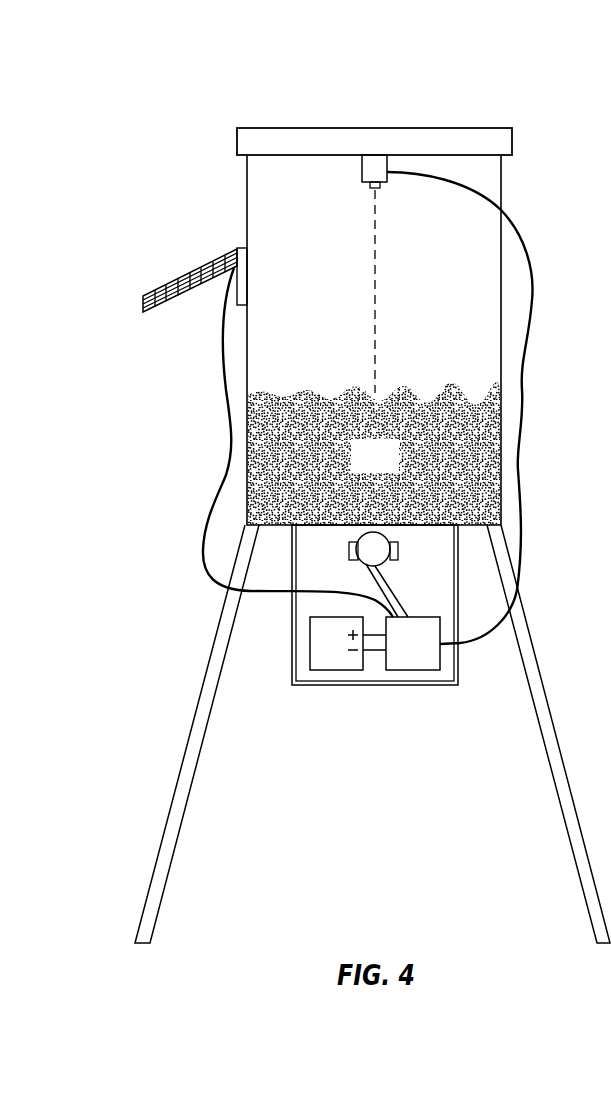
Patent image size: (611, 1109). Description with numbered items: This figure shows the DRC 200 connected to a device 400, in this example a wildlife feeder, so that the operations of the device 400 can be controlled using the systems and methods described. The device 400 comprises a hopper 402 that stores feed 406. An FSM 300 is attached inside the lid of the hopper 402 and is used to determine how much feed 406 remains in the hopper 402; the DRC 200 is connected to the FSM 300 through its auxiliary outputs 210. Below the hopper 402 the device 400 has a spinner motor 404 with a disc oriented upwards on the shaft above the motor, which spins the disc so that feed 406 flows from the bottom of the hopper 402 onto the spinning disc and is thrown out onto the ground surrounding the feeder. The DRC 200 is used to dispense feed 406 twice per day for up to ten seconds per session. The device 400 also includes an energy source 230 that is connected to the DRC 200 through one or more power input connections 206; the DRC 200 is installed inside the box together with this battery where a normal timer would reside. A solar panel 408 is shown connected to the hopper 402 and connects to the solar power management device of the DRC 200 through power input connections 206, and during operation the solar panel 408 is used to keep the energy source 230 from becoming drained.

The device 400 is at (549, 146).
The hopper 402 is at (247, 183).
The feed 406 is at (392, 467).
The FSM 300 is at (367, 186).
The solar panel 408 is at (187, 278).
The power input connections 206 is at (221, 485).
The auxiliary outputs 210 is at (524, 243).
The spinner motor 404 is at (398, 551).
The energy source 230 is at (337, 671).
The DRC 200 is at (415, 671).